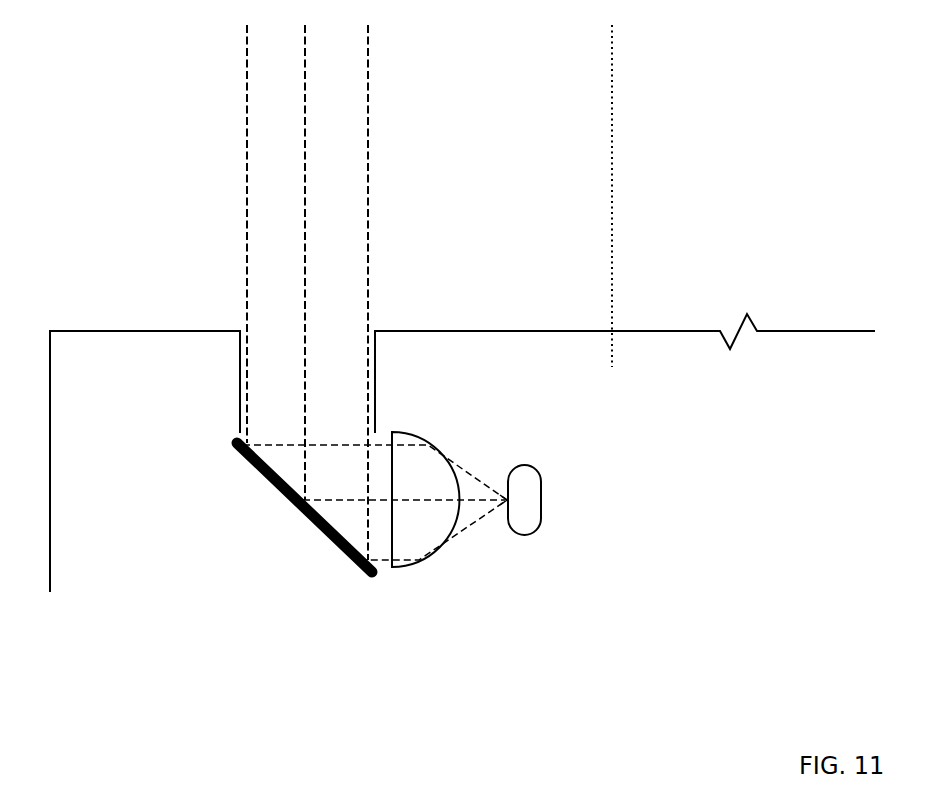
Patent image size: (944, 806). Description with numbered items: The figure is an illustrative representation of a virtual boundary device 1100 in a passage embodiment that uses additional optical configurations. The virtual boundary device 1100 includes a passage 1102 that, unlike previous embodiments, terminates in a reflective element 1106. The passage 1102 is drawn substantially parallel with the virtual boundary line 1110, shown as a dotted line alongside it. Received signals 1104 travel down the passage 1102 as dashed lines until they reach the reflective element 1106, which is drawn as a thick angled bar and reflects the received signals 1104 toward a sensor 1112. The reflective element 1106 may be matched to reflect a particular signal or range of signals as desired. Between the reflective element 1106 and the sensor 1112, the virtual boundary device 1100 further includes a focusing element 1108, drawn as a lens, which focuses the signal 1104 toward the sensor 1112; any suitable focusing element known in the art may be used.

The virtual boundary device 1100 is at (101, 217).
The passage 1102 is at (377, 352).
The received signals 1104 is at (377, 50).
The reflective element 1106 is at (298, 512).
The focusing element 1108 is at (403, 567).
The virtual boundary line 1110 is at (611, 168).
The sensor 1112 is at (541, 512).